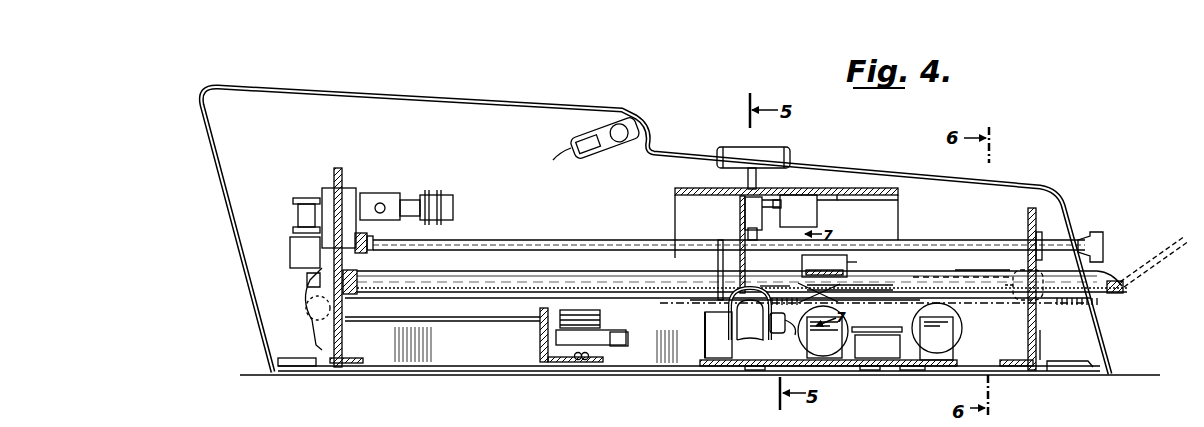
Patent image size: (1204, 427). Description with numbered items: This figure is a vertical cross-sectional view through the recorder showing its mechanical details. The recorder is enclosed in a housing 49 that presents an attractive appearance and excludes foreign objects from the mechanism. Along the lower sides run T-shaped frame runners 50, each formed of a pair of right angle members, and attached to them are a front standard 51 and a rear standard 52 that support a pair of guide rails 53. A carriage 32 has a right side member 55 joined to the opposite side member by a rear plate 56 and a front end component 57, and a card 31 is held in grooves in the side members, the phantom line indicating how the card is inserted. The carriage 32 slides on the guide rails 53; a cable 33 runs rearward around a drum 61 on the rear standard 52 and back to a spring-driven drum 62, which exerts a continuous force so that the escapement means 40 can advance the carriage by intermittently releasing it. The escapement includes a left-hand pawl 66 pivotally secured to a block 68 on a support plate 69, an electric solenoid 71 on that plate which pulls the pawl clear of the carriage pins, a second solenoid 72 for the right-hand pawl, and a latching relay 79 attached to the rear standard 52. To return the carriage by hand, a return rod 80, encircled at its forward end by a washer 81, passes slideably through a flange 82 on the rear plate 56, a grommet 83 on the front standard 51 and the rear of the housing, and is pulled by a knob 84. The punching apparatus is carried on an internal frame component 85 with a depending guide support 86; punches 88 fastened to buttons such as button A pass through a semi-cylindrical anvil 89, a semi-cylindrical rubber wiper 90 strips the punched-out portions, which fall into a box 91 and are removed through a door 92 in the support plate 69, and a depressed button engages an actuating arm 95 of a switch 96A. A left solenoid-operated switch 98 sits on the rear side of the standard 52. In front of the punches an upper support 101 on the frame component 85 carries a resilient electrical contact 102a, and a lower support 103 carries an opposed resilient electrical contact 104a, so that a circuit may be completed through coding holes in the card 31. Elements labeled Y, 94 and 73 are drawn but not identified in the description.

The housing 49 is at (522, 103).
The latch Y is at (645, 119).
The button A is at (758, 155).
The frame runners 50 is at (465, 352).
The rear standard 52 is at (342, 195).
The latching relay 79 is at (400, 192).
The left solenoid-operated switch 98 is at (290, 243).
The washer 81 is at (366, 249).
The return rod 80 is at (596, 228).
The knob 84 is at (1088, 238).
The grommet 83 is at (1026, 238).
The carriage 32 is at (933, 265).
The guide rails 53 is at (516, 262).
The right side member 55 is at (958, 268).
The card 31 is at (1008, 283).
The front end component 57 is at (1124, 288).
The cable 33 is at (468, 298).
The drum 61 is at (305, 312).
The spring-driven drum 62 is at (603, 322).
The internal frame component 85 is at (693, 180).
The flange 82 is at (740, 228).
The guide support 86 is at (745, 215).
The punches 88 is at (757, 234).
The actuating arm 95 is at (783, 218).
The lug 94 is at (777, 199).
The switch 96A is at (810, 196).
The rear plate 56 is at (718, 268).
The anvil 89 is at (772, 294).
The rubber wiper 90 is at (750, 314).
The box 91 is at (718, 335).
The wall 73 is at (705, 320).
The electric solenoid 71 is at (785, 342).
The resilient electrical contact 102a is at (822, 278).
The upper support 101 is at (848, 263).
The resilient electrical contact 104a is at (840, 291).
The lower support 103 is at (845, 302).
The left-hand pawl 66 is at (850, 332).
The block 68 is at (877, 342).
The second solenoid 72 is at (955, 340).
The front standard 51 is at (1036, 352).
The door 92 is at (737, 368).
The support plate 69 is at (835, 366).
The escapement means 40 is at (964, 377).